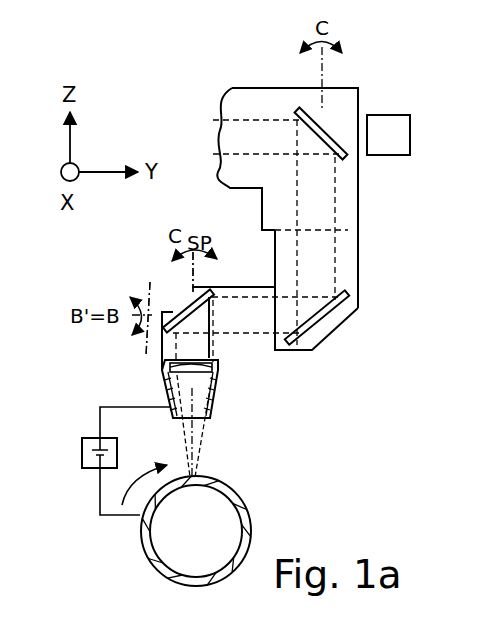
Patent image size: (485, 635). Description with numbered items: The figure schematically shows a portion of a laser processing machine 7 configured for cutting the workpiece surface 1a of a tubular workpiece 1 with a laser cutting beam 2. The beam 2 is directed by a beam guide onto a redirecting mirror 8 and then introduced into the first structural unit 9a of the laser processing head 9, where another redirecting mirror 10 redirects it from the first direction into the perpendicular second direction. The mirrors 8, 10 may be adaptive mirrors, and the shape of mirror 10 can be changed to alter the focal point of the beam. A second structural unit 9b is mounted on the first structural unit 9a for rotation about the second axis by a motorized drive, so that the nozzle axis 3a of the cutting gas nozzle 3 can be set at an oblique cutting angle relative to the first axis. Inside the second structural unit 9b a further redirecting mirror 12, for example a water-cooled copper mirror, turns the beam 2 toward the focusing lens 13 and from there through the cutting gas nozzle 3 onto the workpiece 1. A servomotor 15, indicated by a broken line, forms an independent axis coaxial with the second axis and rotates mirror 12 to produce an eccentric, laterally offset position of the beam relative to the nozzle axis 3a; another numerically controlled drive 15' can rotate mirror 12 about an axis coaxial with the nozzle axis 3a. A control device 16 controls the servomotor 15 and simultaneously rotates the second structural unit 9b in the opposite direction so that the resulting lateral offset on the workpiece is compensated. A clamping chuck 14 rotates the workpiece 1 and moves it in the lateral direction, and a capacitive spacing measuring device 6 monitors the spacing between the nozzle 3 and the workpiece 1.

The tubular workpiece 1 is at (250, 486).
The workpiece surface 1a is at (140, 533).
The laser cutting beam 2 is at (235, 112).
The cutting gas nozzle 3 is at (217, 393).
The nozzle axis 3a is at (208, 416).
The capacitive spacing measuring device 6 is at (92, 443).
The laser processing machine 7 is at (182, 140).
The redirecting mirror 8 is at (328, 125).
The laser processing head 9 is at (368, 292).
The first structural unit 9a is at (343, 257).
The second structural unit 9b is at (248, 306).
The redirecting mirror 10 is at (338, 313).
The redirecting mirror 12 is at (172, 300).
The focusing lens 13 is at (206, 364).
The clamping chuck 14 is at (139, 476).
The servomotor 15 is at (144, 332).
The numerically controlled drive 15' is at (160, 261).
The control device 16 is at (391, 135).